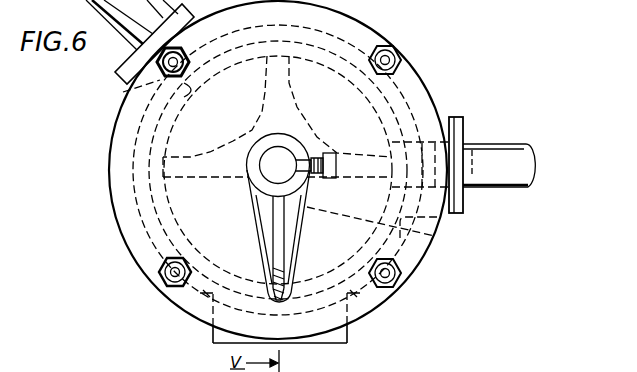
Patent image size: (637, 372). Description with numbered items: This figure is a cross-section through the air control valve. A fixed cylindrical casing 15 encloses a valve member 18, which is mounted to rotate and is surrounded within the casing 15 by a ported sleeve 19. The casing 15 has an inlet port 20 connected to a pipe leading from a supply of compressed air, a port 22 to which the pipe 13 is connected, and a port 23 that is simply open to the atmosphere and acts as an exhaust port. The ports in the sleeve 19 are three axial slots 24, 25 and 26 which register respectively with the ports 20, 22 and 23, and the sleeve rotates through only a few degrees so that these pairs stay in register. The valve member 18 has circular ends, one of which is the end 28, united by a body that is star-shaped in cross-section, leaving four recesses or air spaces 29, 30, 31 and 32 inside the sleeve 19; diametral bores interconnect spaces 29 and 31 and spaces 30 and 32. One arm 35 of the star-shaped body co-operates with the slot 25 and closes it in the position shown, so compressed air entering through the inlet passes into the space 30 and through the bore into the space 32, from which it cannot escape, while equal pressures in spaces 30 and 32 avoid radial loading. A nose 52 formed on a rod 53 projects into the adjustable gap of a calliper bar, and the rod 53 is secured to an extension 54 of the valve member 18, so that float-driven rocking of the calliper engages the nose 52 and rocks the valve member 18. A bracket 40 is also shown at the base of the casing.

The pipe 13 is at (498, 175).
The fixed cylindrical casing 15 is at (412, 72).
The valve member 18 is at (435, 236).
The ported sleeve 19 is at (422, 258).
The inlet port 20 is at (162, 78).
The port 22 is at (465, 207).
The exhaust port 23 is at (207, 294).
The slot 24 is at (150, 115).
The slot 25 is at (393, 152).
The slot 26 is at (180, 241).
The circular end 28 is at (313, 266).
The air space 29 is at (340, 106).
The air space 30 is at (215, 106).
The air space 31 is at (206, 184).
The air space 32 is at (349, 210).
The arm 35 is at (371, 174).
The base bracket 40 is at (280, 331).
The nose 52 is at (277, 300).
The rod 53 is at (272, 225).
The extension 54 is at (266, 165).